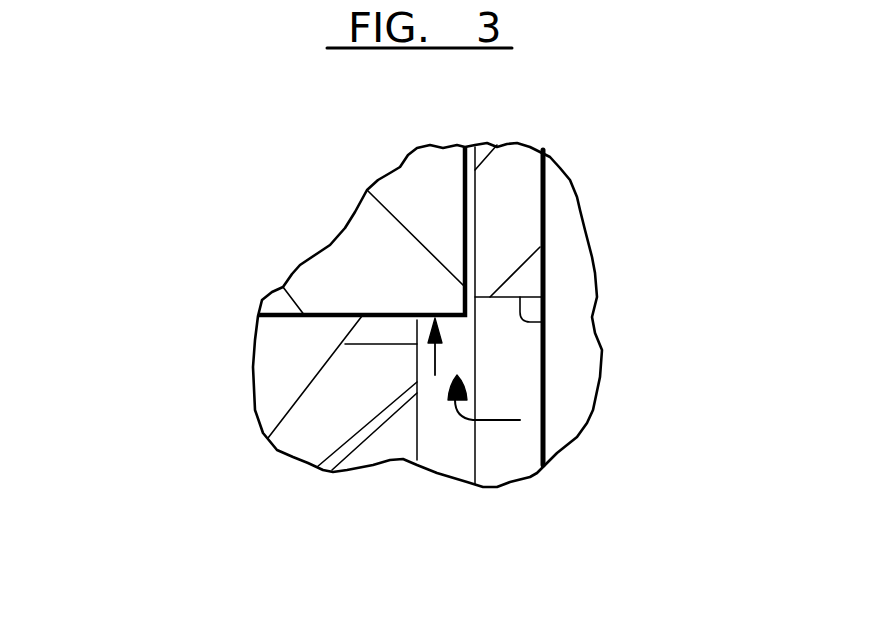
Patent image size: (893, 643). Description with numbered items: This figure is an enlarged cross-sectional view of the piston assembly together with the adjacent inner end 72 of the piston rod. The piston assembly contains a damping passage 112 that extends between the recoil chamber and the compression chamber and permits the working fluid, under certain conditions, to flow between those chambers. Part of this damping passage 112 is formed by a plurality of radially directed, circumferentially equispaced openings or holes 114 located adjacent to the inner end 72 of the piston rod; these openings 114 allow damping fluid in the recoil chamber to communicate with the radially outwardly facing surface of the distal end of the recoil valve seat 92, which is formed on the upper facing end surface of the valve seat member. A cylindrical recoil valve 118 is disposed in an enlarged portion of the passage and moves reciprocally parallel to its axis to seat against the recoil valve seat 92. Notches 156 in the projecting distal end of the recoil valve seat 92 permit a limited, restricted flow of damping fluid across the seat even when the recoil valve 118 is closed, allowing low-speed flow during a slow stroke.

The inner end of the piston rod 72 is at (507, 207).
The radially directed openings or holes 114 is at (547, 317).
The recoil valve 118 is at (373, 253).
The notches 156 is at (375, 332).
The damping passage 112 is at (293, 347).
The recoil valve seat 92 is at (342, 395).